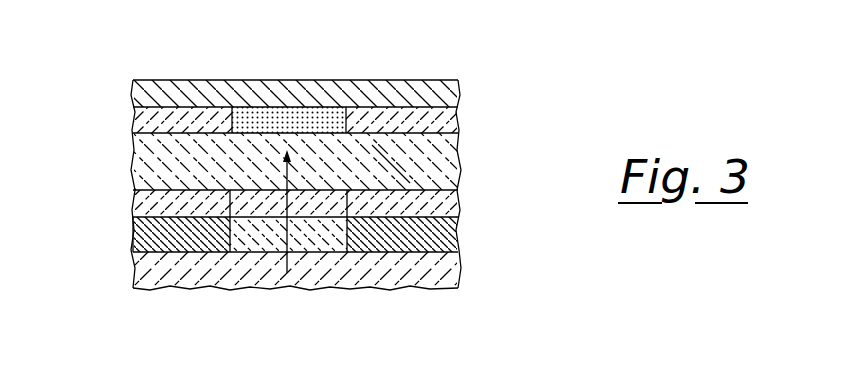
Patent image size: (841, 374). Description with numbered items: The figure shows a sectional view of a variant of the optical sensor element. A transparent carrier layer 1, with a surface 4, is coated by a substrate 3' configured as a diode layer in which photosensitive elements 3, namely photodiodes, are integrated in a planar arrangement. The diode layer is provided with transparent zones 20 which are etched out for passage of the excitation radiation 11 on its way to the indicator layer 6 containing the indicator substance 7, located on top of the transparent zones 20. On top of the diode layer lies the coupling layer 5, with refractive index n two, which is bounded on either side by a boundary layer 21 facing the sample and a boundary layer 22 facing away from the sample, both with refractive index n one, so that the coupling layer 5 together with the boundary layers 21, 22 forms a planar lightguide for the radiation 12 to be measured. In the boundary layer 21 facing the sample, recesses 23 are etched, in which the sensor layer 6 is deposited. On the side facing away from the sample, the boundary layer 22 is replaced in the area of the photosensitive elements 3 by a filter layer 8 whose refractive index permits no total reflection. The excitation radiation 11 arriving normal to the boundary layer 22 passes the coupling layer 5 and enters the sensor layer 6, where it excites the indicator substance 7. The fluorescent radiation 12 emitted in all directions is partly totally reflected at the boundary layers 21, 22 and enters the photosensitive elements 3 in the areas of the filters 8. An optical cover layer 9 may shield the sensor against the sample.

The carrier layer 1 is at (423, 280).
The photosensitive elements 3 is at (296, 202).
The substrate 3' is at (80, 236).
The surface of the carrier layer 4 is at (460, 247).
The coupling layer 5 is at (172, 163).
The indicator layer 6 is at (348, 107).
The indicator substance 7 is at (305, 107).
The filter layer 8 is at (150, 200).
The cover layer 9 is at (188, 88).
The excitation radiation 11 is at (283, 215).
The fluorescent radiation 12 is at (390, 163).
The transparent zones 20 is at (322, 226).
The boundary layer 21 is at (425, 90).
The boundary layer 22 is at (303, 208).
The recesses 23 is at (262, 88).